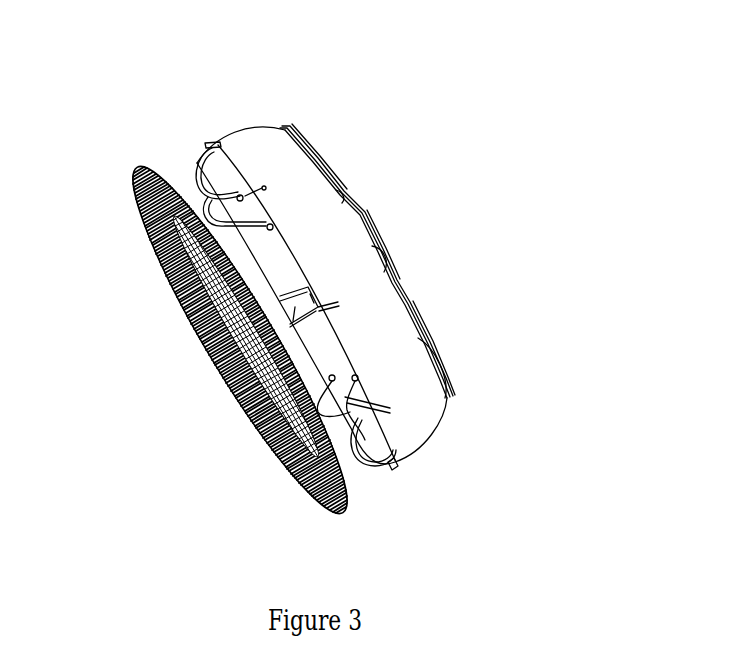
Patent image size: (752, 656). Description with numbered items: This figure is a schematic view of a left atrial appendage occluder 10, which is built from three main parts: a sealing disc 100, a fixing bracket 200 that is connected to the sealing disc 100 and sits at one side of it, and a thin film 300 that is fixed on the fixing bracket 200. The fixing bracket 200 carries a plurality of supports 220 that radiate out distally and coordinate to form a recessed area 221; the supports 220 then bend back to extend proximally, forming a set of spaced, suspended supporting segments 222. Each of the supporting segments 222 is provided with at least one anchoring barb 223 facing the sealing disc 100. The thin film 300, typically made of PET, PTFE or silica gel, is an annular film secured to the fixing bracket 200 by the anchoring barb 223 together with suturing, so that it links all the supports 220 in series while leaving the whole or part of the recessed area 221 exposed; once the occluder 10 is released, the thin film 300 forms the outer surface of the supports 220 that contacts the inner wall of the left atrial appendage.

The left atrial appendage occluder 10 is at (388, 115).
The sealing disc 100 is at (217, 314).
The fixing bracket 200 is at (372, 303).
The supports 220 is at (448, 392).
The recessed area 221 is at (392, 263).
The supporting segments 222 is at (377, 468).
The anchoring barb 223 is at (397, 465).
The thin film 300 is at (423, 423).